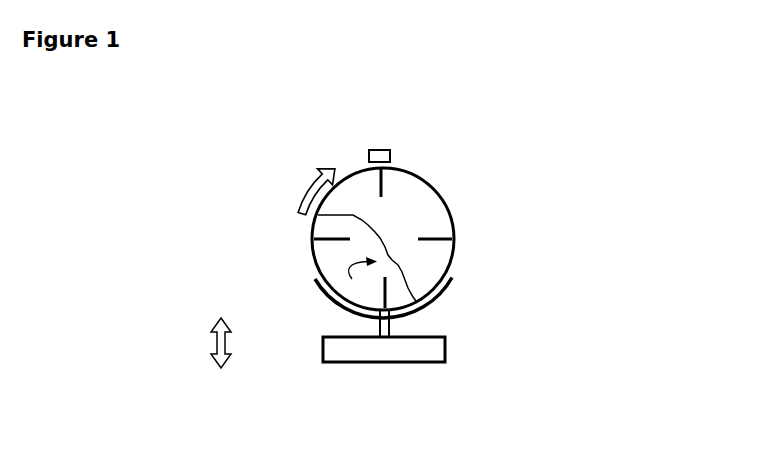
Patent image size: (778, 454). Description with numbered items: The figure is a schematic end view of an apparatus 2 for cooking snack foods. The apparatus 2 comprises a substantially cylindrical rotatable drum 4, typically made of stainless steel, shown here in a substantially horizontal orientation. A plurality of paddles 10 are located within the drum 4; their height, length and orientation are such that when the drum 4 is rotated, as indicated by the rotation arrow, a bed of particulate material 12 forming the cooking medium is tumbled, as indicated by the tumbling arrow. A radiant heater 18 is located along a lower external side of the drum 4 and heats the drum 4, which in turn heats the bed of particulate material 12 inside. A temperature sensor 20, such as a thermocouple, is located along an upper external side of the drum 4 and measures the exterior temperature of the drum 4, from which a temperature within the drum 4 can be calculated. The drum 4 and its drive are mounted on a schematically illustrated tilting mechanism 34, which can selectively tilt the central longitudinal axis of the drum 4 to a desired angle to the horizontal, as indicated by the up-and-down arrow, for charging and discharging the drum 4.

The apparatus 2 is at (147, 193).
The rotatable drum 4 is at (453, 257).
The paddles 10 is at (433, 237).
The bed of particulate material 12 is at (332, 258).
The radiant heater 18 is at (430, 305).
The temperature sensor 20 is at (382, 150).
The tilting mechanism 34 is at (332, 350).